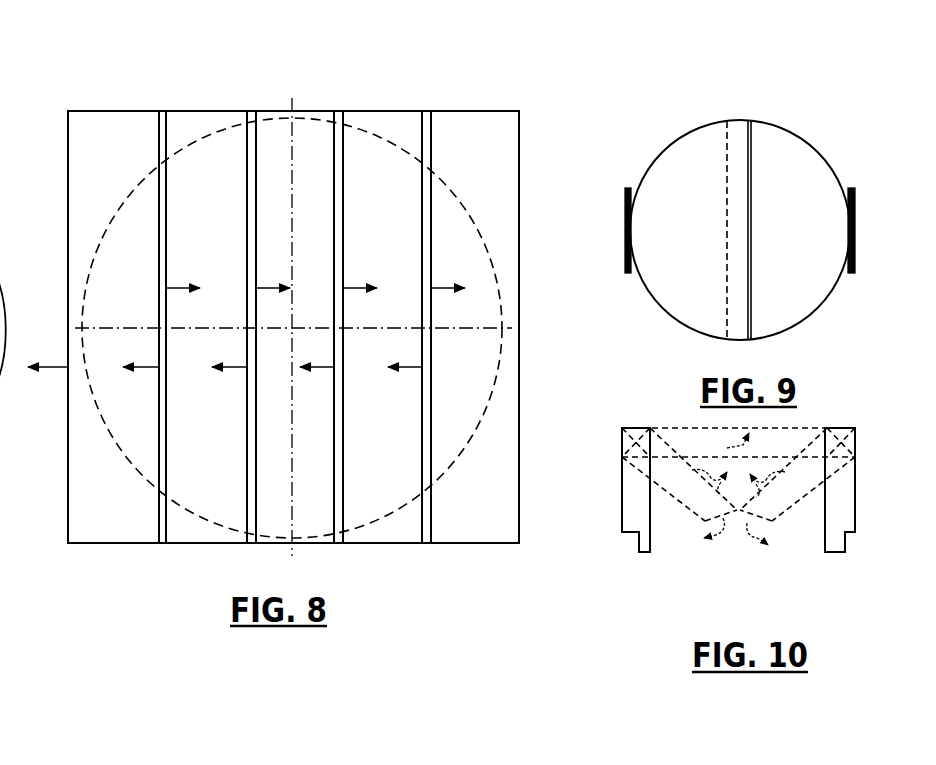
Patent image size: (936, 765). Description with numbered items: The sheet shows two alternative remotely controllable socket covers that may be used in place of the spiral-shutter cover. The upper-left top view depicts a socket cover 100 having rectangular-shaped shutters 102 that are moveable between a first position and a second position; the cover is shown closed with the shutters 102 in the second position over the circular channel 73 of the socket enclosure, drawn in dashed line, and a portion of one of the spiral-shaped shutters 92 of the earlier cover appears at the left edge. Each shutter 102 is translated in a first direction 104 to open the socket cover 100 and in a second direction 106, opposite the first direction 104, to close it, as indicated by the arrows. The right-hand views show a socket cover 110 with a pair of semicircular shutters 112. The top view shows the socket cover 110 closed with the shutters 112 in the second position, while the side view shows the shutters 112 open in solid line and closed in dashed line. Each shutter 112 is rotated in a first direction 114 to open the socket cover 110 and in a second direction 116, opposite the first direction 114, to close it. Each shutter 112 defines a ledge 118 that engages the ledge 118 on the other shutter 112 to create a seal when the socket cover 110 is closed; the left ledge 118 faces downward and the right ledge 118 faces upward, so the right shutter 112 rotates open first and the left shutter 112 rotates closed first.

In FIG. 8, the channel 73 is at (460, 203).
In FIG. 8, the spiral-shaped shutters 92 is at (6, 303).
In FIG. 8, the socket cover 100 is at (127, 63).
In FIG. 8, the rectangular-shaped shutters 102 is at (115, 122).
In FIG. 8, the first direction 104 is at (315, 275).
In FIG. 8, the second direction 106 is at (220, 381).
In FIG. 9, the socket cover 110 is at (652, 110).
In FIG. 10, the socket cover 110 is at (641, 378).
In FIG. 9, the semicircular shutters 112 is at (675, 178).
In FIG. 10, the semicircular shutters 112 is at (688, 426).
In FIG. 10, the first direction 114 is at (755, 533).
In FIG. 10, the second direction 116 is at (735, 465).
In FIG. 10, the ledge 118 is at (640, 537).